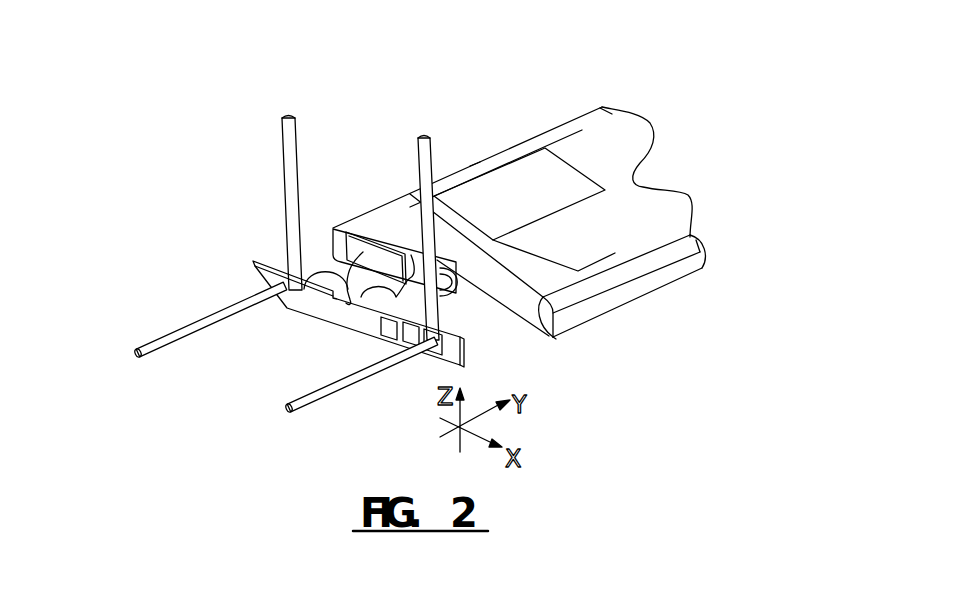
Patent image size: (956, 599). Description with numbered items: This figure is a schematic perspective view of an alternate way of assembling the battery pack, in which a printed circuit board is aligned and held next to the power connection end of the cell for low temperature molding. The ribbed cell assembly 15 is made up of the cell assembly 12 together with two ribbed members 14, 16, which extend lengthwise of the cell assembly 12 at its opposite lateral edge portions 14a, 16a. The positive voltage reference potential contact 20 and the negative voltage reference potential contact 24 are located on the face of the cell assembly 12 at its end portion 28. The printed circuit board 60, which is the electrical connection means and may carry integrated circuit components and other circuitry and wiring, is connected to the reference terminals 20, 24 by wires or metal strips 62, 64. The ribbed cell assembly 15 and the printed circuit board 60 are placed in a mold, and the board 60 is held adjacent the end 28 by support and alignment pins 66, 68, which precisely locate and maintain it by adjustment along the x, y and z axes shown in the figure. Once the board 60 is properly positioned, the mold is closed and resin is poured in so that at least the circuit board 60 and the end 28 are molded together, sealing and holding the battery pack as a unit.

The cell assembly 12 is at (545, 183).
The ribbed member 14 is at (581, 99).
The lateral edge portion 14a is at (617, 98).
The ribbed cell assembly 15 is at (476, 142).
The ribbed member 16 is at (689, 240).
The lateral edge portion 16a is at (712, 247).
The positive voltage reference potential contact 20 is at (440, 271).
The negative voltage reference potential contact 24 is at (350, 243).
The end portion 28 is at (562, 345).
The printed circuit board 60 is at (250, 265).
The wire or metal strip 62 is at (290, 306).
The wire or metal strip 64 is at (372, 316).
The support and alignment pin 66 is at (167, 336).
The support and alignment pin 68 is at (282, 118).